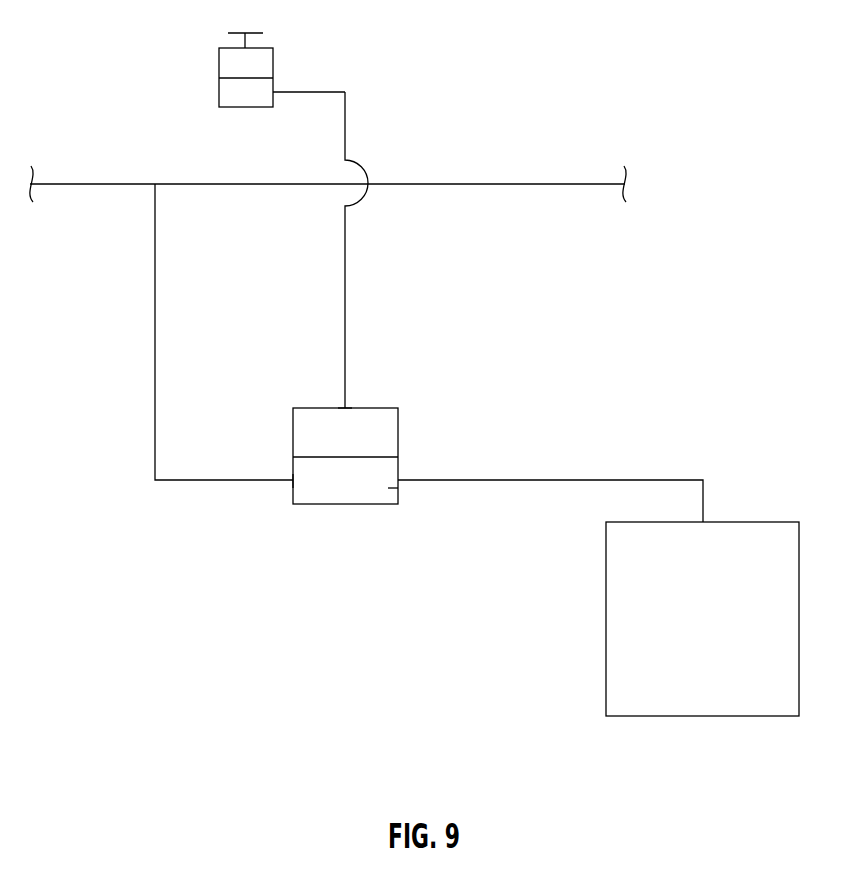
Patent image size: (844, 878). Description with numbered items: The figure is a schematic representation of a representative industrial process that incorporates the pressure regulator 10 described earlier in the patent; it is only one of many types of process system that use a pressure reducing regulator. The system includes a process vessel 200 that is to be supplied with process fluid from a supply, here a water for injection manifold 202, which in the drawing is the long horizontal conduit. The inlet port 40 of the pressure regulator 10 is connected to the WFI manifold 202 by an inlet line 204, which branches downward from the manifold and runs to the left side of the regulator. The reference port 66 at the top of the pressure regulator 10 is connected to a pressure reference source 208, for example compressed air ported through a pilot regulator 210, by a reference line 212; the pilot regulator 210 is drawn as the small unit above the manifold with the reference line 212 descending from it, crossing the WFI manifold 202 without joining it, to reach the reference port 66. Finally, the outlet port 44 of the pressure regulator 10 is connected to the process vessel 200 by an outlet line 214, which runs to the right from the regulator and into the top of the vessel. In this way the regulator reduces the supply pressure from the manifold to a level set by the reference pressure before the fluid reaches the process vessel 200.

The pressure regulator 10 is at (341, 528).
The inlet port 40 is at (293, 488).
The outlet port 44 is at (388, 488).
The reference port 66 is at (344, 400).
The process vessel 200 is at (732, 637).
The WFI manifold 202 is at (575, 184).
The inlet line 204 is at (155, 295).
The pressure reference source 208 is at (205, 137).
The pilot regulator 210 is at (273, 68).
The reference line 212 is at (345, 281).
The outlet line 214 is at (588, 482).